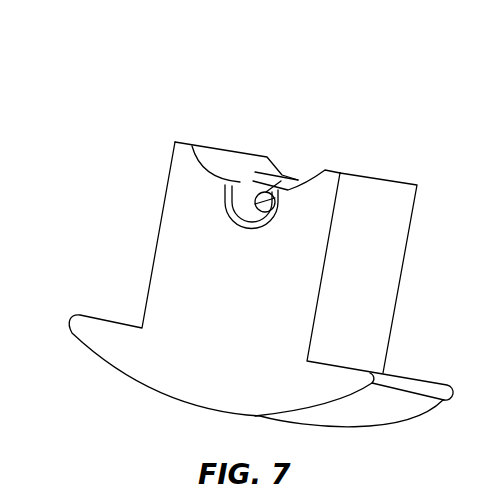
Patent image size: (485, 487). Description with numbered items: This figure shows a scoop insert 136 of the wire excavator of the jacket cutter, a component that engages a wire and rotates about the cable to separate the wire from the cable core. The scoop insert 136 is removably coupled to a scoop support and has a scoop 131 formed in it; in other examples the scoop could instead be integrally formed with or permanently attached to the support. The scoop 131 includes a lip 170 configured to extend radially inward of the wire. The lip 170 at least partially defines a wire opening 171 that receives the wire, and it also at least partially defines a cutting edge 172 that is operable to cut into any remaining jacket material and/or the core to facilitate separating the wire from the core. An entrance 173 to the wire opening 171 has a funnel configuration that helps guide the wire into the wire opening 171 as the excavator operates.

The scoop insert 136 is at (151, 44).
The scoop 131 is at (287, 178).
The lip 170 is at (255, 176).
The wire opening 171 is at (234, 200).
The cutting edge 172 is at (248, 182).
The entrance 173 is at (233, 220).